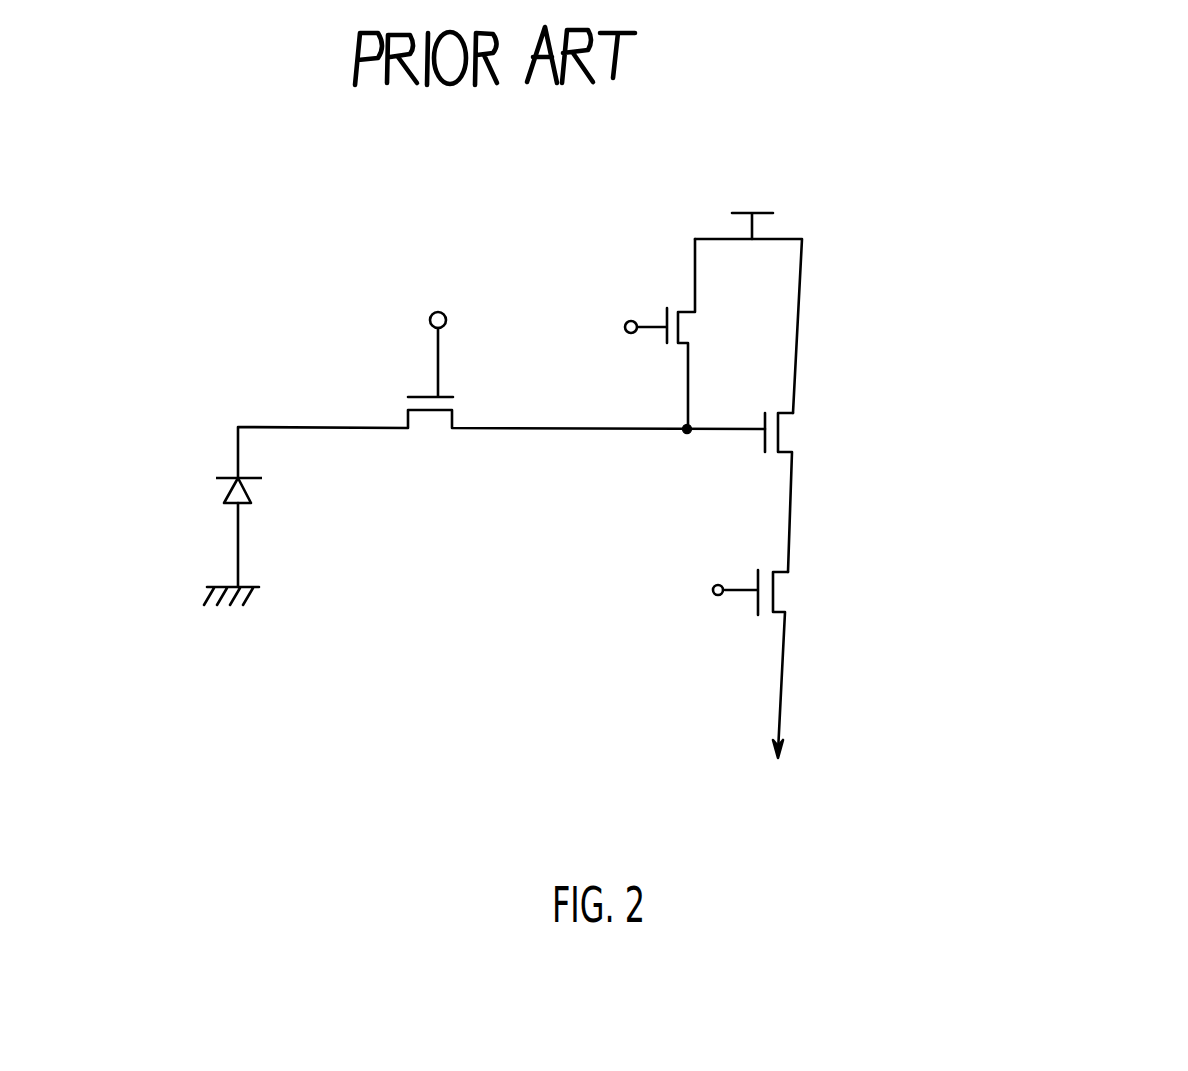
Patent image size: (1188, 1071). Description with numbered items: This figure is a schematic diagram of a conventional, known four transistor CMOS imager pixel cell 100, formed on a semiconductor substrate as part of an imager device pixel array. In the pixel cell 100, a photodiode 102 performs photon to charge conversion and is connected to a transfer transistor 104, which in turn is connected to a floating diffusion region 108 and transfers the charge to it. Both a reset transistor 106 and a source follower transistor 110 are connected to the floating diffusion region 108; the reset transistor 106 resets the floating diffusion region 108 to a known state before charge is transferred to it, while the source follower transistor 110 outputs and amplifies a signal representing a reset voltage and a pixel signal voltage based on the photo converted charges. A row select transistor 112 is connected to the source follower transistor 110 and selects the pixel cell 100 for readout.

The pixel cell 100 is at (1173, 140).
The photodiode 102 is at (218, 470).
The transfer transistor 104 is at (398, 400).
The reset transistor 106 is at (667, 300).
The floating diffusion region 108 is at (683, 434).
The source follower transistor 110 is at (772, 455).
The row select transistor 112 is at (762, 562).